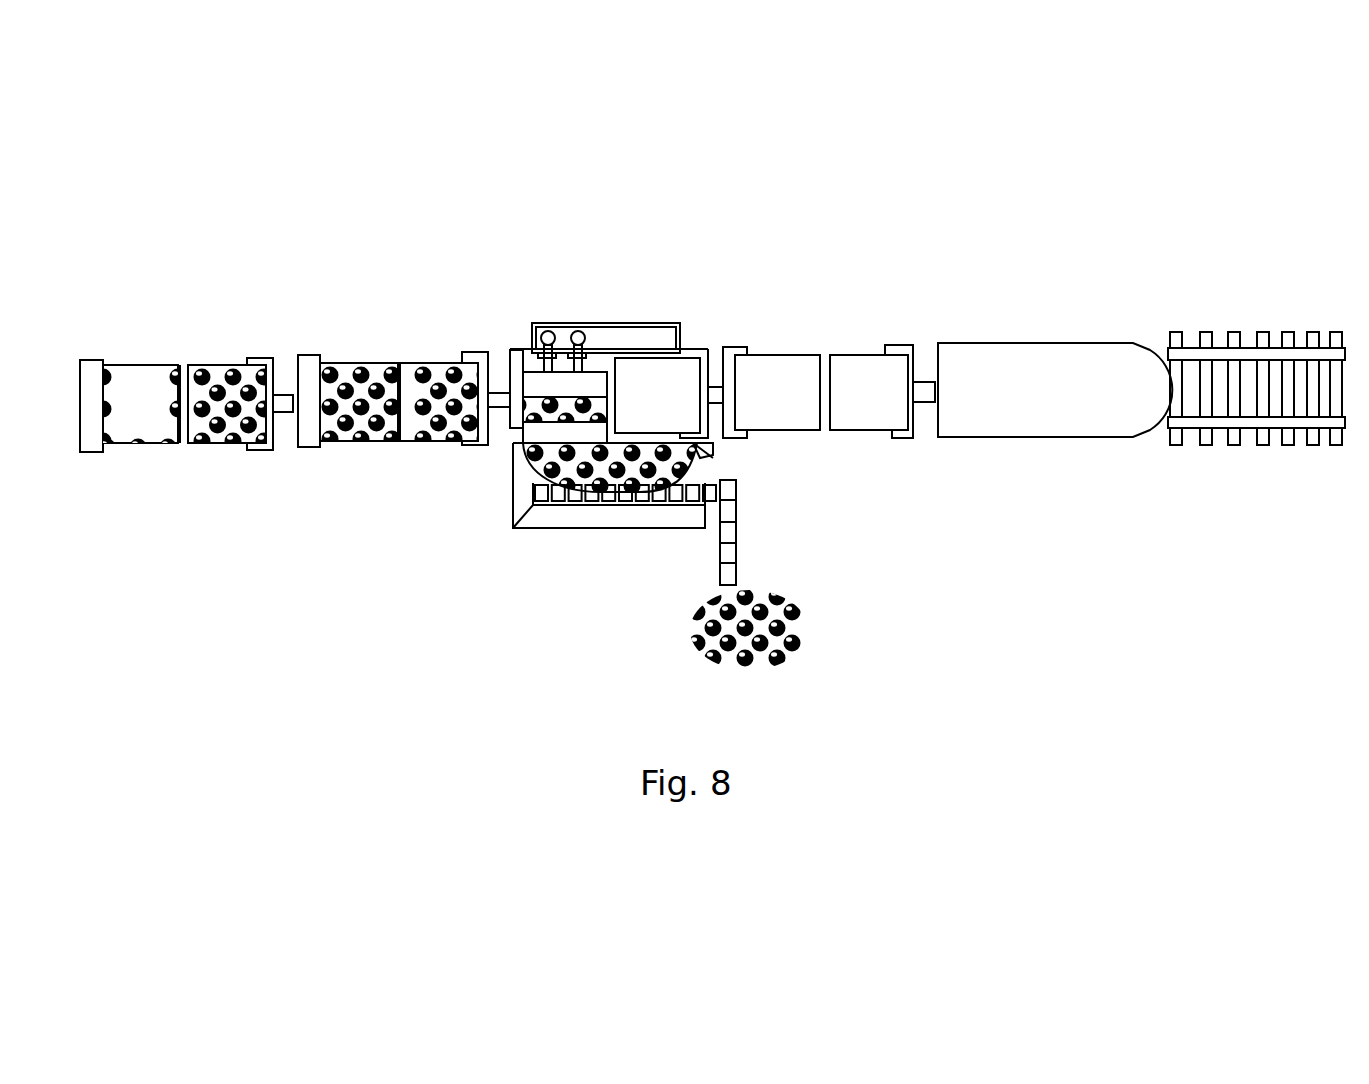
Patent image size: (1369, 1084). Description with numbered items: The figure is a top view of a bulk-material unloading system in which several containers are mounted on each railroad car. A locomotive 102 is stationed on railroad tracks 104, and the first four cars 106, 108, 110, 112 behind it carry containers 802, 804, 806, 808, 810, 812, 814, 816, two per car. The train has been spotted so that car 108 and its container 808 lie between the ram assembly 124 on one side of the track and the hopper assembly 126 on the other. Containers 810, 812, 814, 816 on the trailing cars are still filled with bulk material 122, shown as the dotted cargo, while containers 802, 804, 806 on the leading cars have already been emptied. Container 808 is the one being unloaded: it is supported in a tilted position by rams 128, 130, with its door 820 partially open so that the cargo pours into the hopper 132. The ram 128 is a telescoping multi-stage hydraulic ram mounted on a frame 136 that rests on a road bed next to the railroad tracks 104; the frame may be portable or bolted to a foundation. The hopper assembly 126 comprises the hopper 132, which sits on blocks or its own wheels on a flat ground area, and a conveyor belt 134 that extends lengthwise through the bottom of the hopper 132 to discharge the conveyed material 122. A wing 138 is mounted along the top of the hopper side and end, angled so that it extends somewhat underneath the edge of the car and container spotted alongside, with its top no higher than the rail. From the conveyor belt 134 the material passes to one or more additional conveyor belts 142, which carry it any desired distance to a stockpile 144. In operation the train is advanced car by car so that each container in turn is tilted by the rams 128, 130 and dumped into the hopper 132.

The locomotive 102 is at (1080, 380).
The railroad tracks 104 is at (1220, 357).
The car 106 is at (900, 342).
The car 108 is at (702, 348).
The car 110 is at (307, 362).
The car 112 is at (262, 363).
The bulk material 122 is at (233, 445).
The ram assembly 124 is at (607, 337).
The hopper assembly 126 is at (543, 552).
The ram 128 is at (543, 330).
The ram 130 is at (580, 330).
The hopper 132 is at (618, 520).
The conveyor belt 134 is at (578, 497).
The frame 136 is at (665, 333).
The wing 138 is at (713, 448).
The conveyor belt 142 is at (730, 535).
The stockpile 144 is at (778, 628).
The container 802 is at (847, 420).
The container 804 is at (790, 420).
The container 806 is at (653, 392).
The container 808 is at (548, 385).
The container 810 is at (428, 443).
The container 812 is at (360, 443).
The container 814 is at (207, 445).
The container 816 is at (120, 445).
The door 820 is at (551, 432).